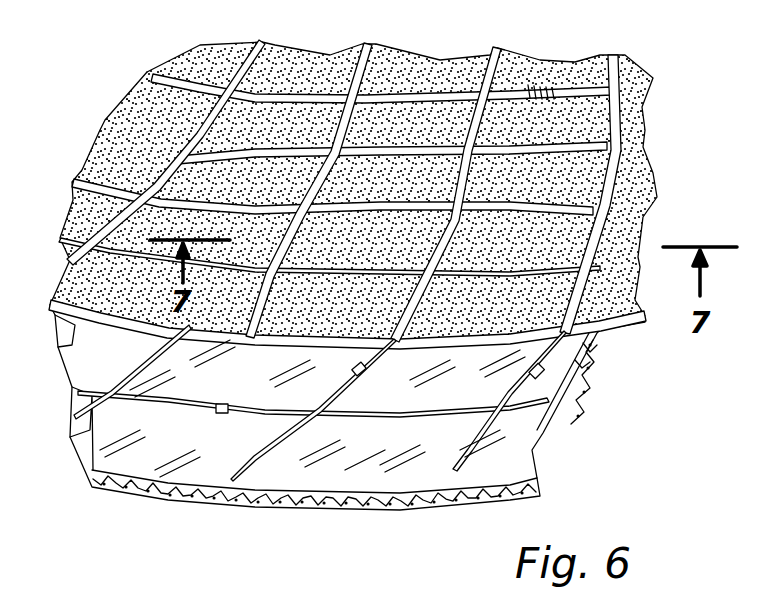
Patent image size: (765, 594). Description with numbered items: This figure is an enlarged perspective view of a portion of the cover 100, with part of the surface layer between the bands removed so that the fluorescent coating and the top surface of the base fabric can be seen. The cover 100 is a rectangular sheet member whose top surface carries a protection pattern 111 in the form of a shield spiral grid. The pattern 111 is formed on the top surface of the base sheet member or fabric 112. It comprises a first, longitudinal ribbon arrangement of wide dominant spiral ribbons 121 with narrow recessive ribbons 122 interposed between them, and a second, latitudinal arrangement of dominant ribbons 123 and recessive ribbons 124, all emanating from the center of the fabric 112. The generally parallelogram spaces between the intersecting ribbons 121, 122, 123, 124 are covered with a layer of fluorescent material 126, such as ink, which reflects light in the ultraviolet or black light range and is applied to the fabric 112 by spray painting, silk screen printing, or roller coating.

The cover 100 is at (657, 107).
The protection pattern 111 is at (608, 182).
The base sheet member or fabric 112 is at (572, 362).
The first spiral ribbon 121 is at (565, 90).
The first spiral ribbon 122 is at (133, 127).
The dominant ribbon 123 is at (366, 55).
The recessive ribbon 124 is at (498, 52).
The fluorescent material 126 is at (117, 162).